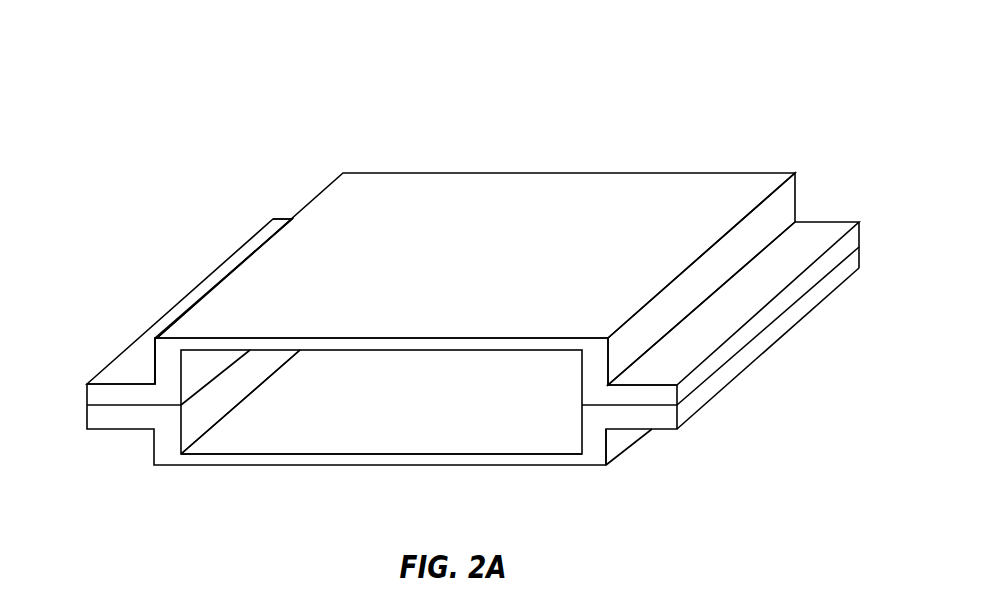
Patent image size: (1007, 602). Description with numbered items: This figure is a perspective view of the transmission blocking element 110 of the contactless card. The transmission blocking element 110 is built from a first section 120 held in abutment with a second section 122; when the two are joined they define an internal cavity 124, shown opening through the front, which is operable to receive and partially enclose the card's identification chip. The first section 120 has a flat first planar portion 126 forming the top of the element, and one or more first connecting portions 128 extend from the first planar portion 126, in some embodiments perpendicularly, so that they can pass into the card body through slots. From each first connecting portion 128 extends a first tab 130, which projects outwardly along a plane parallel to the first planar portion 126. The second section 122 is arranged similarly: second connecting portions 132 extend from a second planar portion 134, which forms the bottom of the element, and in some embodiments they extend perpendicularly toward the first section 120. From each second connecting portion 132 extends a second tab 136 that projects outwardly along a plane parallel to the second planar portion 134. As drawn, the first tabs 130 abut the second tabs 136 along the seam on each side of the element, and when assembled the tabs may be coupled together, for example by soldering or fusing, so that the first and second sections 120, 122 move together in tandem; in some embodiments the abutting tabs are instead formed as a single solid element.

The transmission blocking element 110 is at (217, 111).
The first section 120 is at (495, 180).
The second section 122 is at (248, 482).
The internal cavity 124 is at (371, 435).
The first planar portion 126 is at (415, 218).
The first connecting portion 128 is at (777, 212).
The first tab 130 is at (117, 378).
The second connecting portion 132 is at (620, 440).
The second planar portion 134 is at (533, 460).
The second tab 136 is at (97, 418).